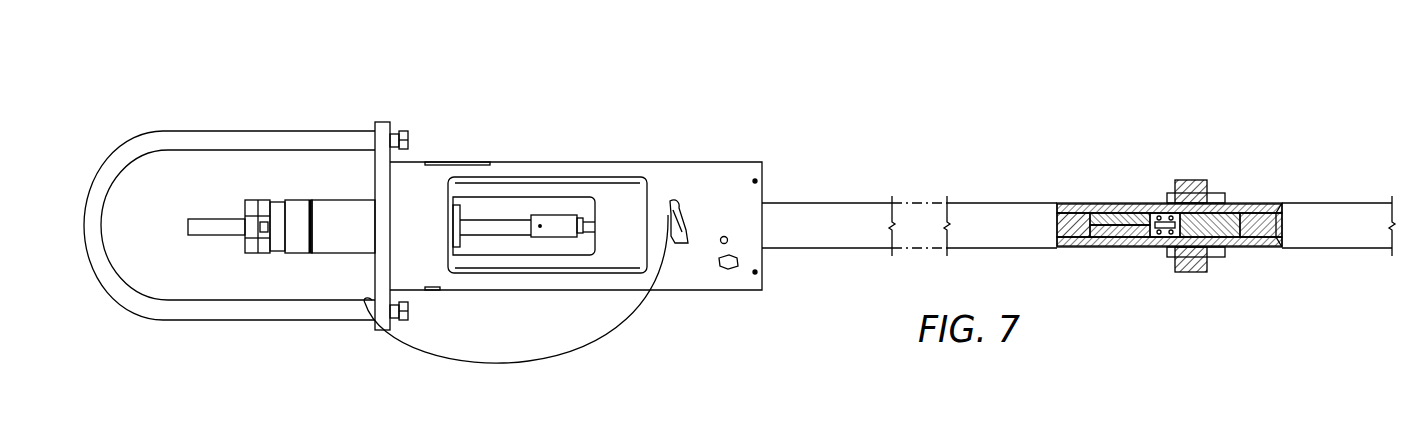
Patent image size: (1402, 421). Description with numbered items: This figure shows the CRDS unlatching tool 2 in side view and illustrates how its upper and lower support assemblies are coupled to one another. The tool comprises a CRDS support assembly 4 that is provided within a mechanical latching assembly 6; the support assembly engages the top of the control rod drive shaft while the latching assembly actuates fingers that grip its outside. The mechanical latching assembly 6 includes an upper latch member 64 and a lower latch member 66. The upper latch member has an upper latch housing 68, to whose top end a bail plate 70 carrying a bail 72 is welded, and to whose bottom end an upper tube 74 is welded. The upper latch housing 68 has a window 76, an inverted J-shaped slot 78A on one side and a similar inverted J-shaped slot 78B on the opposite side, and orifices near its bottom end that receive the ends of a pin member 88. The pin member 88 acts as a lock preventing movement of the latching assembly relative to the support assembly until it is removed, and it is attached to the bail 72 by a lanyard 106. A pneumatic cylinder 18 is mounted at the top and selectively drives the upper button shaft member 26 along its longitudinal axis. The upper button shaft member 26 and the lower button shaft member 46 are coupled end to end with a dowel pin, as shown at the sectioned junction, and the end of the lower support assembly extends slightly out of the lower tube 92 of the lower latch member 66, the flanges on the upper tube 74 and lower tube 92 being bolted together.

The CRDS unlatching tool 2 is at (901, 148).
The CRDS support assembly 4 is at (613, 185).
The mechanical latching assembly 6 is at (576, 209).
The pneumatic cylinder 18 is at (343, 243).
The upper button shaft member 26 is at (1146, 235).
The lower button shaft member 46 is at (1236, 246).
The upper latch member 64 is at (797, 263).
The lower latch member 66 is at (1328, 258).
The upper latch housing 68 is at (708, 162).
The bail plate 70 is at (383, 127).
The bail 72 is at (242, 140).
The upper tube 74 is at (807, 212).
The window 76 is at (547, 222).
The inverted J-shaped slot 78A is at (432, 290).
The inverted J-shaped slot 78B is at (450, 163).
The pin member 88 is at (683, 218).
The lower tube 92 is at (1302, 212).
The lanyard 106 is at (432, 360).